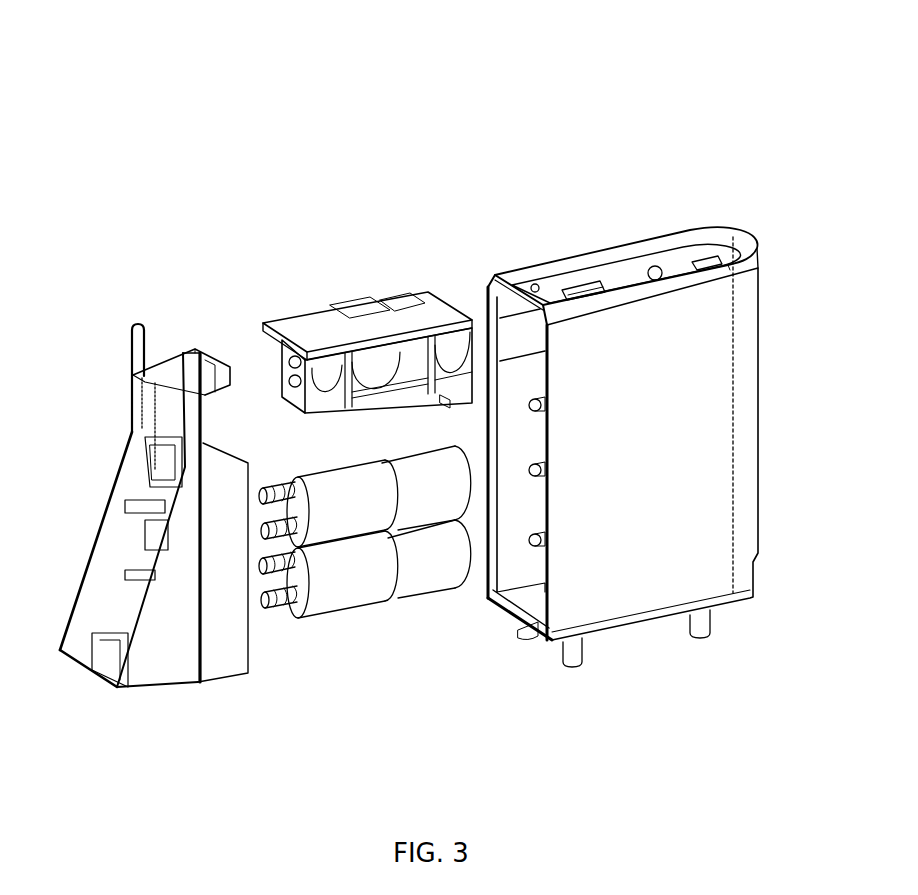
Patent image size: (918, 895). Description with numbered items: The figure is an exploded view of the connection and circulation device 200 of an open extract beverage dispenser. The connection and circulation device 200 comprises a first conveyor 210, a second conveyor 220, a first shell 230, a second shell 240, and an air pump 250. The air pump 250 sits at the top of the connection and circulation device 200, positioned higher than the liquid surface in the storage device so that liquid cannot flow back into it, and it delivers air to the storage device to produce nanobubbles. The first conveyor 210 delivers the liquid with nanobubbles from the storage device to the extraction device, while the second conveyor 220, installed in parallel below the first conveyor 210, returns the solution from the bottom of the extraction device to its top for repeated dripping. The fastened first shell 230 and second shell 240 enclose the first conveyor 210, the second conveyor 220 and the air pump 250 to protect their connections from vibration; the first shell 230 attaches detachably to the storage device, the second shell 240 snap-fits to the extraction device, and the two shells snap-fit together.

The connection and circulation device 200 is at (462, 30).
The first conveyor 210 is at (347, 517).
The second conveyor 220 is at (424, 620).
The first shell 230 is at (580, 573).
The second shell 240 is at (223, 665).
The air pump 250 is at (398, 320).